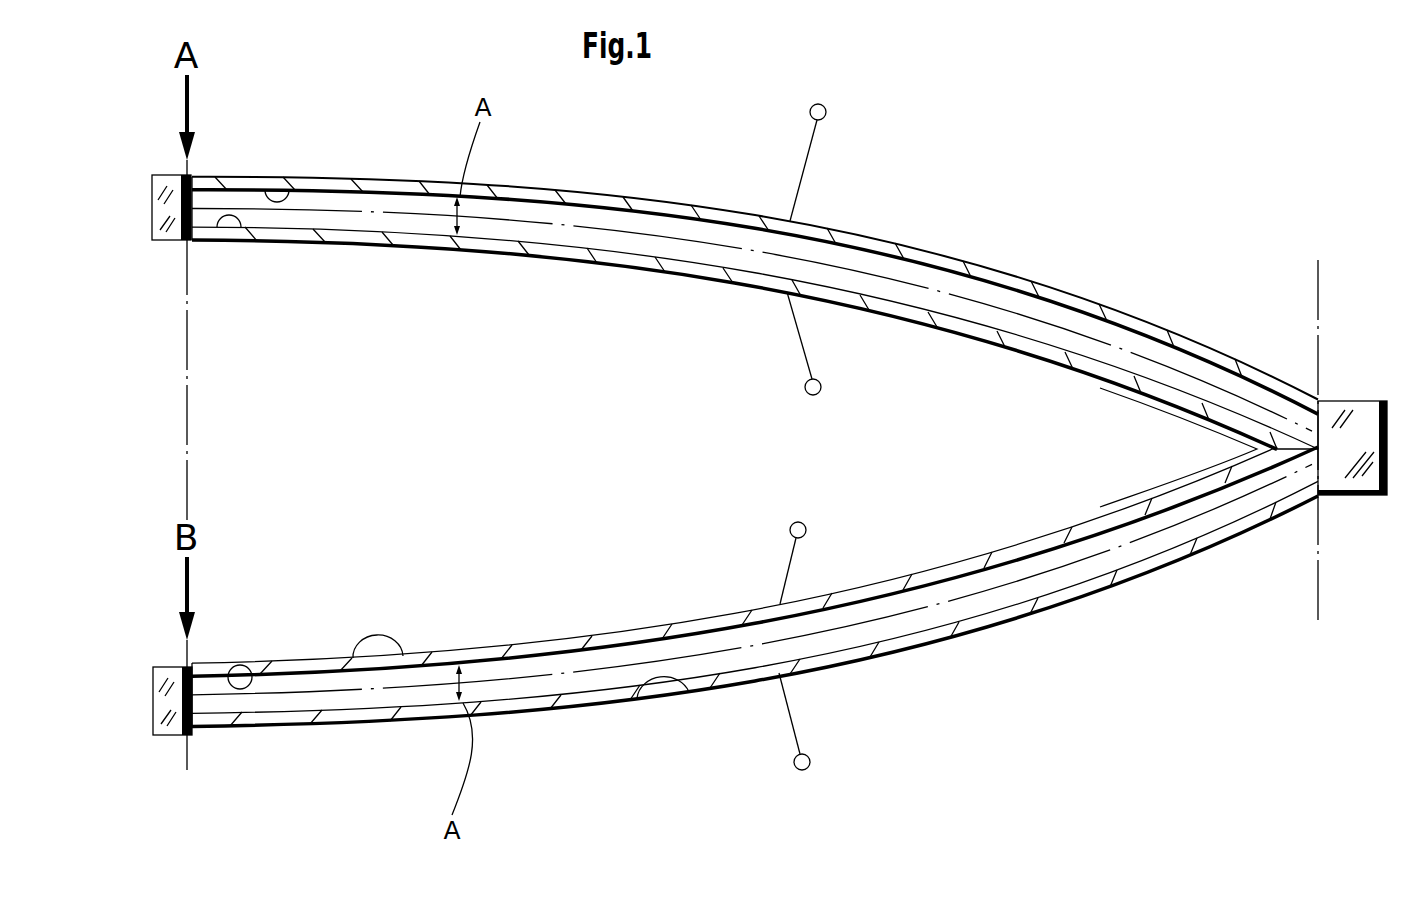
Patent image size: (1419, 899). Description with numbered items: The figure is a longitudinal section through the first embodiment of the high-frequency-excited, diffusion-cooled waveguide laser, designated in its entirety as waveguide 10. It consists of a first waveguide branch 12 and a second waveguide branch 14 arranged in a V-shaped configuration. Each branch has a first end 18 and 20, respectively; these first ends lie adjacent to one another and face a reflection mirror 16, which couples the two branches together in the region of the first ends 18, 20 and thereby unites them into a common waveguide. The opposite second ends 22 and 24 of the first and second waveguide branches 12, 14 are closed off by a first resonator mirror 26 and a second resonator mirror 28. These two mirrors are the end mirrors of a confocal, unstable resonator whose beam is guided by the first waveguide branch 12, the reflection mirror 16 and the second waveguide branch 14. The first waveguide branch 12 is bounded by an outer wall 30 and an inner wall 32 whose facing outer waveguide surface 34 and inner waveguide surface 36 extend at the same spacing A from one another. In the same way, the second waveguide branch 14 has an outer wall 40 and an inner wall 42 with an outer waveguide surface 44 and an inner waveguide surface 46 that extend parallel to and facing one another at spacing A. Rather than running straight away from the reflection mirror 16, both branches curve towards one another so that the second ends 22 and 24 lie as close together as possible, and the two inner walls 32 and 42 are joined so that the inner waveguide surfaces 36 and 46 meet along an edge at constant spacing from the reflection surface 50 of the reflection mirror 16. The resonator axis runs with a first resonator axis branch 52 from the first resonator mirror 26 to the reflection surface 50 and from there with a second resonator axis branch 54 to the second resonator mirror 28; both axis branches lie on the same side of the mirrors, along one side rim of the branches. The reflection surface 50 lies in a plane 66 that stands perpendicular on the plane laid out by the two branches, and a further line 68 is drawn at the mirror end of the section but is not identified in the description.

The waveguide 10 is at (898, 213).
The first waveguide branch 12 is at (755, 271).
The second waveguide branch 14 is at (792, 646).
The reflection mirror 16 is at (1358, 437).
The first end 18 is at (1293, 385).
The first end 20 is at (1322, 497).
The second end 22 is at (130, 202).
The second end 24 is at (130, 694).
The first resonator mirror 26 is at (151, 191).
The second resonator mirror 28 is at (150, 709).
The outer wall 30 is at (646, 201).
The inner wall 32 is at (700, 268).
The outer waveguide surface 34 is at (283, 185).
The inner waveguide surface 36 is at (230, 237).
The outer wall 40 is at (1200, 545).
The inner wall 42 is at (558, 641).
The outer waveguide surface 44 is at (697, 693).
The inner waveguide surface 46 is at (246, 668).
The reflection surface 50 is at (1265, 472).
The first resonator axis branch 52 is at (403, 205).
The second resonator axis branch 54 is at (950, 605).
The plane 66 is at (1295, 302).
The section axis 68 is at (180, 410).